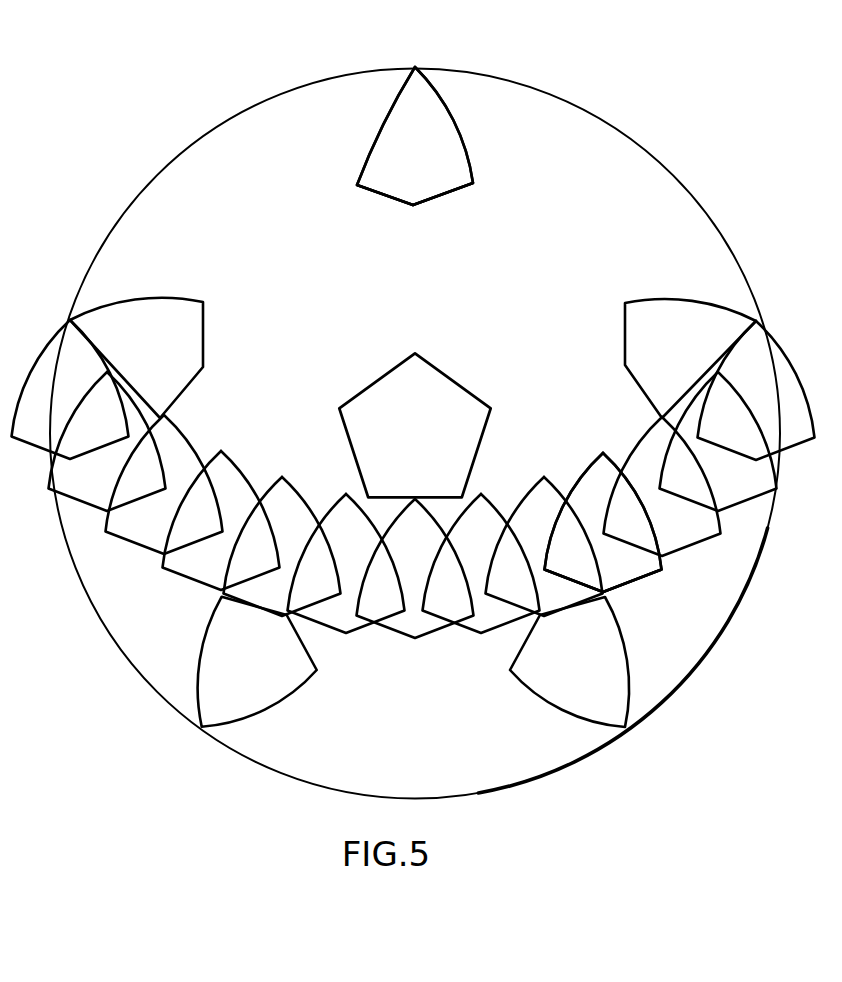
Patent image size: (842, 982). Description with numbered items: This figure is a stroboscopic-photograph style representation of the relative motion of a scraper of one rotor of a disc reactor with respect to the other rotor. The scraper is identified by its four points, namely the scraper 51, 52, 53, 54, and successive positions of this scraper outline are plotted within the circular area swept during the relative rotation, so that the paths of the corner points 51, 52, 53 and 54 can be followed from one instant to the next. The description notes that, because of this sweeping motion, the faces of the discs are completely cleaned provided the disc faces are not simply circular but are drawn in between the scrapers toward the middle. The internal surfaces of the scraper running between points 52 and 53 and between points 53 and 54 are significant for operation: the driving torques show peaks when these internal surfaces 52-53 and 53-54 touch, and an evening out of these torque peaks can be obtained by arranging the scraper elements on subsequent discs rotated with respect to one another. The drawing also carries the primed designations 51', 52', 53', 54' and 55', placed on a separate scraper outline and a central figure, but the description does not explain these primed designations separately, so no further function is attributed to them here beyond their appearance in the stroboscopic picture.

The apex vertex of tile 51' is at (415, 114).
The first base vertex of tile 52' is at (367, 136).
The bottom vertex of tile 53' is at (415, 210).
The second base vertex of tile 54' is at (466, 136).
The central pentagon 55' is at (414, 407).
The scraper 51 is at (603, 505).
The scraper 52 is at (646, 530).
The scraper 53 is at (603, 572).
The scraper 54 is at (574, 522).